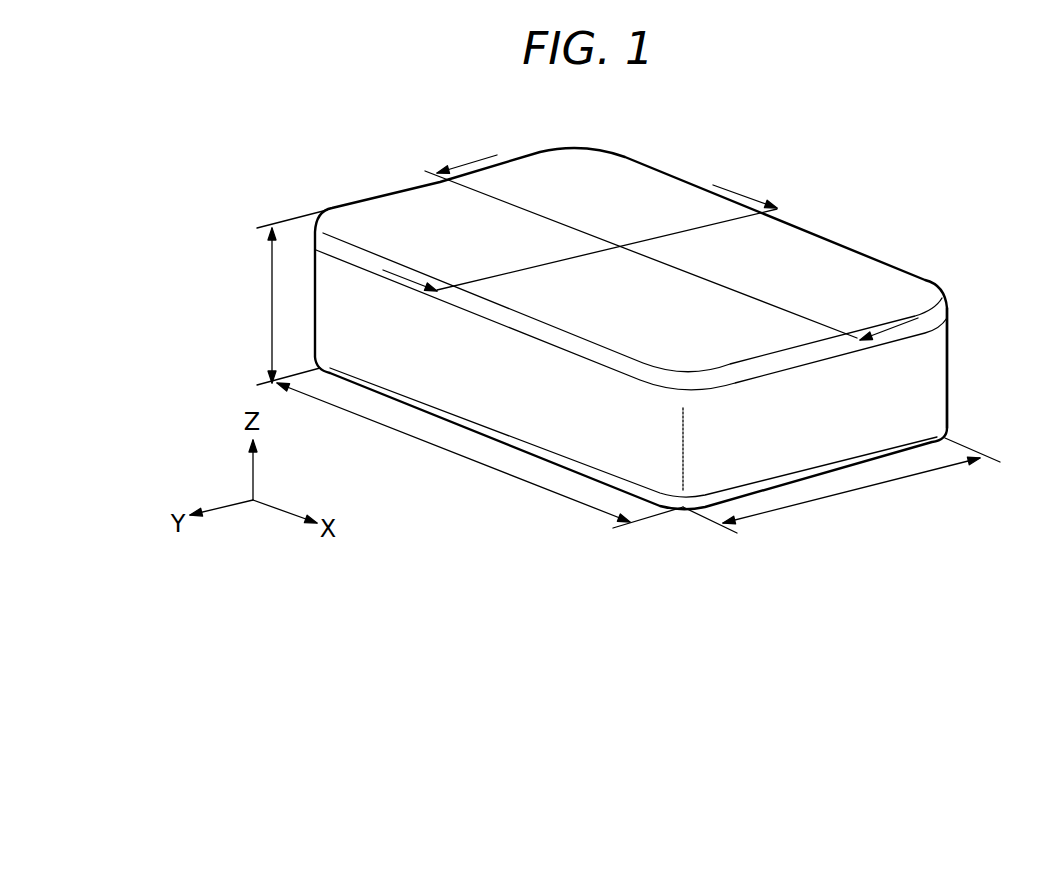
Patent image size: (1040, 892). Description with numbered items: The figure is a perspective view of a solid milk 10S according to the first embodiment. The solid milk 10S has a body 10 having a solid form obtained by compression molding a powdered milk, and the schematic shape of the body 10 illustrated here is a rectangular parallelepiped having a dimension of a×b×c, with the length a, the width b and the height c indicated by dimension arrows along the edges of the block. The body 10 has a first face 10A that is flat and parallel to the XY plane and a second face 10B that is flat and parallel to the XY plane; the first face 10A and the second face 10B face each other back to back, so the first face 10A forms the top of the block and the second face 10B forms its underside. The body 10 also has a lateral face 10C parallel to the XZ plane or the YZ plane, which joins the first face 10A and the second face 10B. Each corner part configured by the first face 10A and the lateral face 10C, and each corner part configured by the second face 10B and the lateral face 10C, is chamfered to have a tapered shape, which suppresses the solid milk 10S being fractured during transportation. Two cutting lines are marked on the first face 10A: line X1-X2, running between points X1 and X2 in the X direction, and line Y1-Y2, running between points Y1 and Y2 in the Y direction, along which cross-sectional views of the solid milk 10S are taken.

The solid milk 10S is at (820, 120).
The body 10 is at (930, 285).
The first face 10A is at (827, 257).
The second face 10B is at (913, 456).
The lateral face 10C is at (925, 385).
The line X1-X2 end point X1 is at (408, 277).
The line X1-X2 end point X2 is at (733, 185).
The line Y1-Y2 end point Y1 is at (482, 155).
The line Y1-Y2 end point Y2 is at (897, 326).
The dimension a is at (480, 455).
The dimension b is at (841, 485).
The dimension c is at (291, 297).